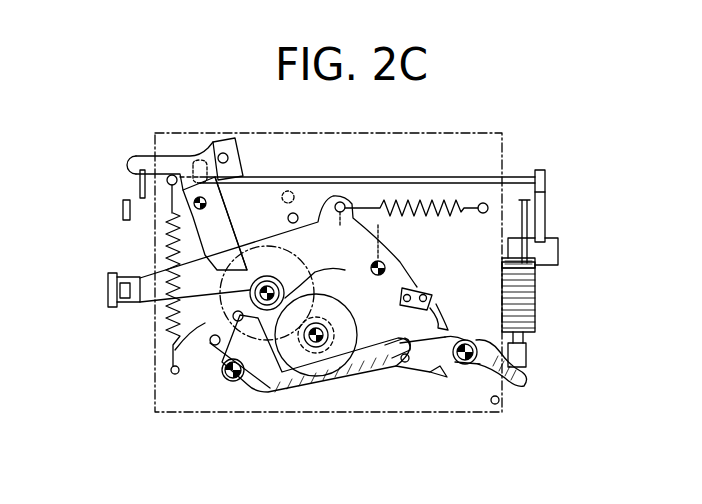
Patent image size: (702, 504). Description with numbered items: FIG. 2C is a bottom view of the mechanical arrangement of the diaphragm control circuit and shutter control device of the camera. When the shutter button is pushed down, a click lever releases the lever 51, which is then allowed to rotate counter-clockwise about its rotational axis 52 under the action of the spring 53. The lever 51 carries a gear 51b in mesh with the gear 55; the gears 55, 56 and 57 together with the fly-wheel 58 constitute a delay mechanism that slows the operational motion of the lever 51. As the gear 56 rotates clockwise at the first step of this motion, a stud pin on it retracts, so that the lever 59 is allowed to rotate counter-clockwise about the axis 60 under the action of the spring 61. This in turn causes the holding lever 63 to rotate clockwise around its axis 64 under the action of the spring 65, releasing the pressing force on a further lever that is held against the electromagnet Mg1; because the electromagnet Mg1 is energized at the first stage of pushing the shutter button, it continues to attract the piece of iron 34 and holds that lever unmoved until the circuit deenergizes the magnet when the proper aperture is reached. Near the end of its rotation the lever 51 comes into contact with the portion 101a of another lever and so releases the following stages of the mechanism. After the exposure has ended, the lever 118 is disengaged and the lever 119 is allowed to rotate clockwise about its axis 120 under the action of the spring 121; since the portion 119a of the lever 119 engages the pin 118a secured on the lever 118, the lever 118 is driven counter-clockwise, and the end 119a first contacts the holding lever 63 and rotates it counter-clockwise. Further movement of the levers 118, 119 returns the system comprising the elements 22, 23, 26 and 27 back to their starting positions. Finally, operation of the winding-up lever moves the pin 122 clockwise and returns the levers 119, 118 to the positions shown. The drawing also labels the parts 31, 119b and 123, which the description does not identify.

The element 22 is at (403, 175).
The element 23 is at (540, 212).
The element 26 is at (548, 247).
The element 27 is at (525, 200).
The electromagnet Mg1 is at (523, 297).
The armature 31 is at (527, 350).
The piece of iron 34 is at (527, 365).
The lever 51 is at (175, 163).
The gear 51b is at (200, 348).
The rotational axis 52 is at (243, 223).
The spring 53 is at (172, 338).
The gear 55 is at (280, 293).
The gear 56 is at (298, 275).
The gear 57 is at (320, 333).
The fly-wheel 58 is at (347, 335).
The lever 59 is at (300, 393).
The axis 60 is at (220, 382).
The spring 61 is at (243, 383).
The holding lever 63 is at (390, 367).
The axis 64 is at (463, 364).
The spring 65 is at (440, 375).
The portion of lever 101a is at (122, 205).
The lever 118 is at (108, 288).
The pin 118a is at (120, 278).
The lever 119 is at (367, 238).
The portion of lever 119a is at (125, 305).
The spring bracket 119b is at (440, 307).
The axis 120 is at (385, 265).
The spring 121 is at (447, 217).
The pin 122 is at (223, 153).
The pivot pin 123 is at (288, 215).